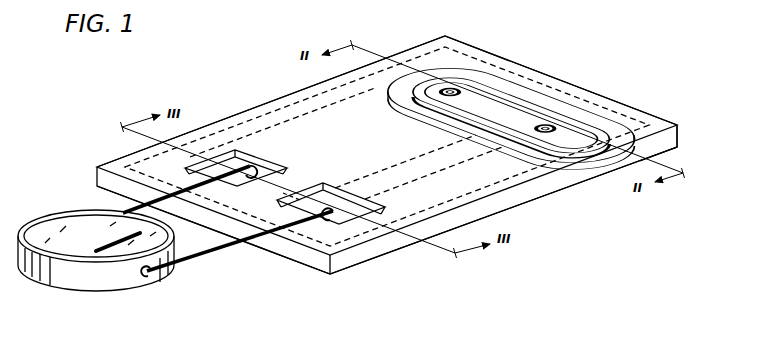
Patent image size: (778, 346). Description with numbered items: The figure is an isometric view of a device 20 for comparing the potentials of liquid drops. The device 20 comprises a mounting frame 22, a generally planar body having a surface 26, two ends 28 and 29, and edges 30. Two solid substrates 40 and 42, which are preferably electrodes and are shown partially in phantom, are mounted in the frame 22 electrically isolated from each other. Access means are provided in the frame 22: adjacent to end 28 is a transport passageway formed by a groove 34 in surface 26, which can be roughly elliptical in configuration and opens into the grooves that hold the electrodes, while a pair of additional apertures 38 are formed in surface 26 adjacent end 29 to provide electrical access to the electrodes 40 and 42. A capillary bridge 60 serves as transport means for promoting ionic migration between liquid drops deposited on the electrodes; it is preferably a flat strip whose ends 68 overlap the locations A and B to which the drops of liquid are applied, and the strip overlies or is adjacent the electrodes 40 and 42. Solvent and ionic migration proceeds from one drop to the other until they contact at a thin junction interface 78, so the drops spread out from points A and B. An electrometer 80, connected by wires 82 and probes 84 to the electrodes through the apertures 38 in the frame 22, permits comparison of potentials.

The device 20 is at (211, 117).
The mounting frame 22 is at (522, 184).
The surface 26 is at (434, 191).
The end 28 is at (620, 107).
The end 29 is at (303, 254).
The edges 30 is at (402, 52).
The groove 34 is at (478, 66).
The apertures 38 is at (239, 158).
The solid substrate 40 is at (353, 207).
The solid substrate 42 is at (258, 167).
The capillary bridge 60 is at (423, 110).
The ends 68 is at (663, 128).
The junction interface 78 is at (531, 88).
The electrometer 80 is at (133, 280).
The wires 82 is at (122, 210).
The probes 84 is at (290, 195).
The location A is at (568, 108).
The location B is at (456, 86).